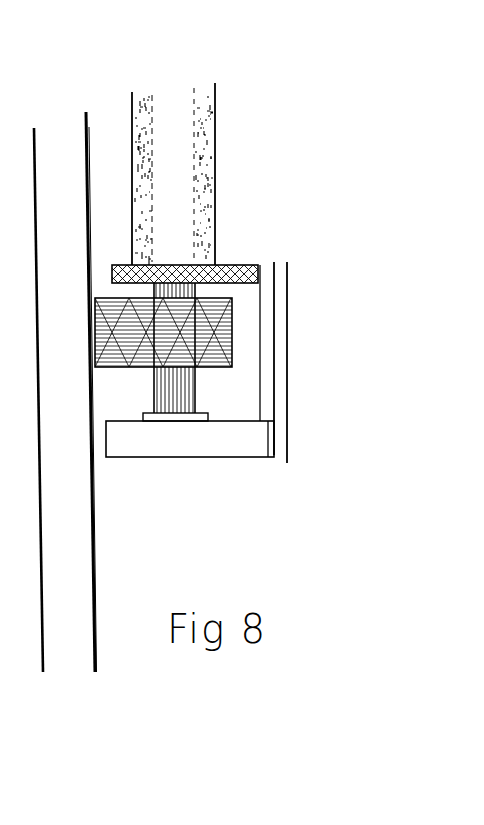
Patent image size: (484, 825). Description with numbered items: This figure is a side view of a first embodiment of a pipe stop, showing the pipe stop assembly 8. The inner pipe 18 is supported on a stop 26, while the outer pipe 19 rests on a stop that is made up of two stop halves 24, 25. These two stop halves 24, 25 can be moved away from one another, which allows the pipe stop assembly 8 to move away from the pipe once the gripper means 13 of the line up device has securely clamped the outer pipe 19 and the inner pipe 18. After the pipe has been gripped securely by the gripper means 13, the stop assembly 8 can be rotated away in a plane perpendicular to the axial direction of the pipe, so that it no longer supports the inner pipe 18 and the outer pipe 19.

The pipe stop assembly 8 is at (238, 316).
The gripper means 13 is at (232, 316).
The inner pipe 18 is at (175, 398).
The outer pipe 19 is at (212, 135).
The stop half 24 is at (247, 265).
The stop half 25 is at (210, 227).
The stop 26 is at (238, 438).